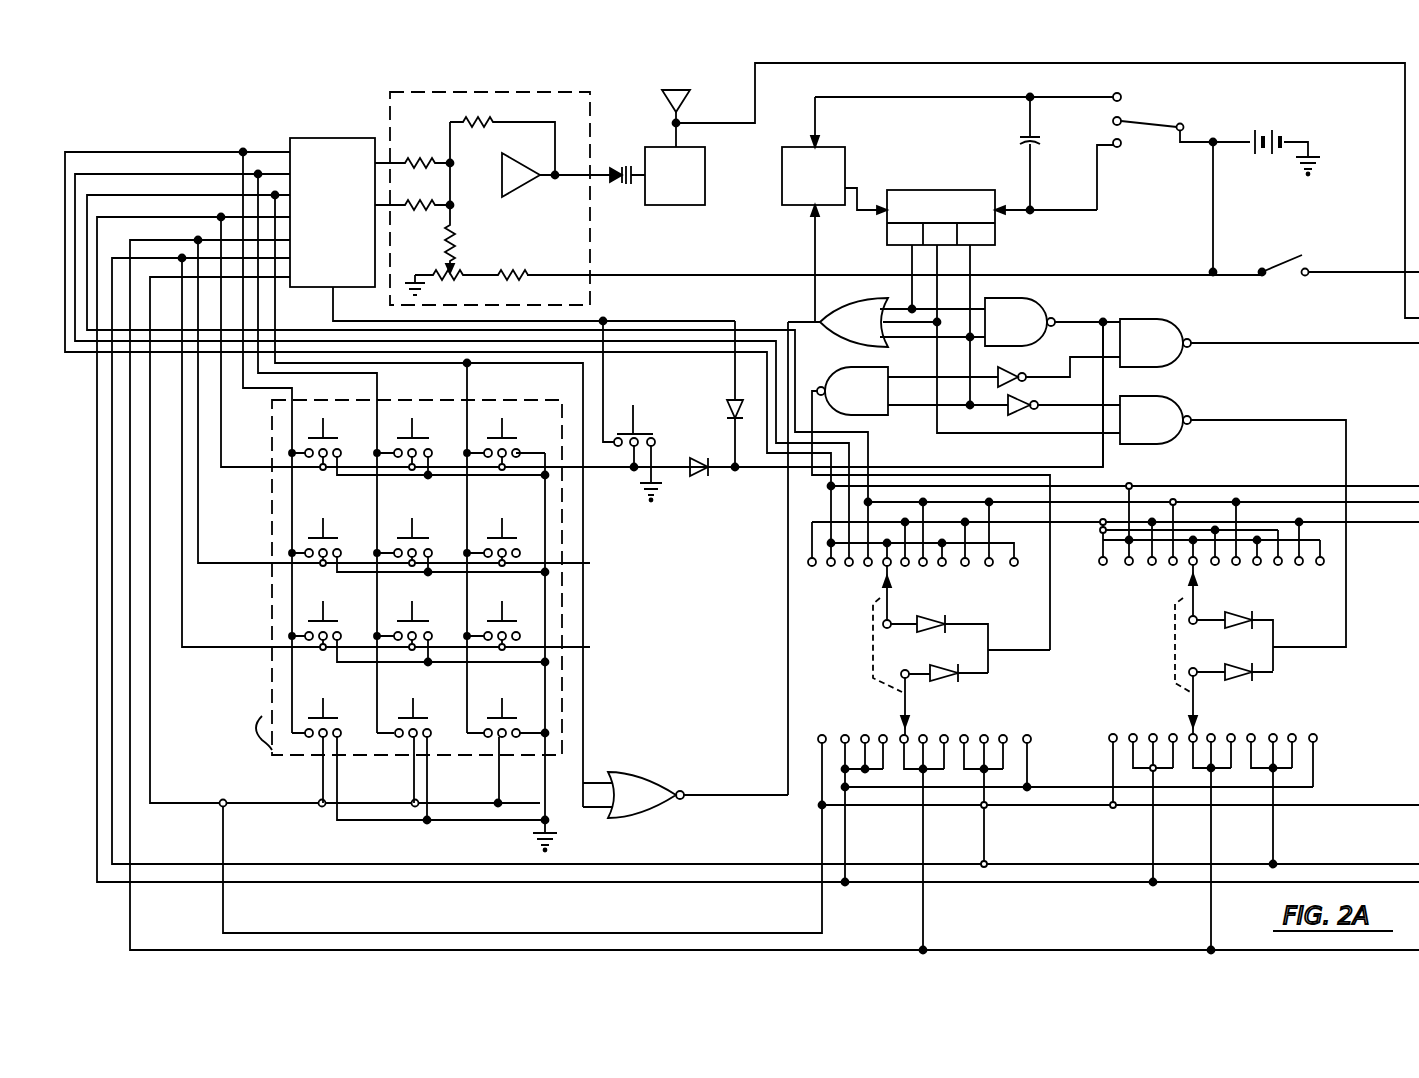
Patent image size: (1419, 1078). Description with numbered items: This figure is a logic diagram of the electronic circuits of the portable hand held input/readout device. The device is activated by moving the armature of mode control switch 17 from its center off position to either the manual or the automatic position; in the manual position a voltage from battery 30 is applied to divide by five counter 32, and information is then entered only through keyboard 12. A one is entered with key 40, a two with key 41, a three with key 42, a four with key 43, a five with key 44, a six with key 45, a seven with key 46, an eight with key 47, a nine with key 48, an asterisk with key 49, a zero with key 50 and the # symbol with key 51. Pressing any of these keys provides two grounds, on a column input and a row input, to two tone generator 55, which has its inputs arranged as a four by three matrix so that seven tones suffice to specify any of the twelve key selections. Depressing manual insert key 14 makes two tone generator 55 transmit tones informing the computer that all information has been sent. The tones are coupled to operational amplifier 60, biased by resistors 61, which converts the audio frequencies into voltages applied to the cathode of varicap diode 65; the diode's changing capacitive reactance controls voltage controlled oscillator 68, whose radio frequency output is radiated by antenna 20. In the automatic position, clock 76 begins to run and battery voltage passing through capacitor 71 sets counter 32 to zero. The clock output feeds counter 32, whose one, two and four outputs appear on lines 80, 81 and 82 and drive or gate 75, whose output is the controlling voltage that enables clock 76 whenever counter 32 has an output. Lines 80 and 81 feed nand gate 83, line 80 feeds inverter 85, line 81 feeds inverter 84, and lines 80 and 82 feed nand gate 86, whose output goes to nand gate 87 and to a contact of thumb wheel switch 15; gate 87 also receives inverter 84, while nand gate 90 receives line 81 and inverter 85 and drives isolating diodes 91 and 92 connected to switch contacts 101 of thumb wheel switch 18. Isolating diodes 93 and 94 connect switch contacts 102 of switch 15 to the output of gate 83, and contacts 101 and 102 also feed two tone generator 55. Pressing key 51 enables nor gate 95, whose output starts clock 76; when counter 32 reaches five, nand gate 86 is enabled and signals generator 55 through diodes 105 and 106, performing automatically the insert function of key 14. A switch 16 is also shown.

The keyboard 12 is at (272, 450).
The manual insert key 14 is at (636, 432).
The thumb wheel switch 15 is at (873, 652).
The switch 16 is at (1285, 253).
The mode control switch 17 is at (1168, 122).
The thumb wheel switch 18 is at (1173, 650).
The antenna 20 is at (684, 92).
The battery 30 is at (1283, 128).
The divide by five counter 32 is at (952, 190).
The key 40 is at (326, 433).
The key 41 is at (415, 433).
The key 42 is at (505, 433).
The key 43 is at (326, 533).
The key 44 is at (415, 533).
The key 45 is at (505, 533).
The key 46 is at (326, 616).
The key 47 is at (415, 616).
The key 48 is at (505, 616).
The key 49 is at (326, 713).
The key 50 is at (416, 713).
The key 51 is at (505, 713).
The two tone generator 55 is at (325, 138).
The operational amplifier 60 is at (448, 92).
The resistors 61 is at (432, 160).
The varicap diode 65 is at (613, 166).
The voltage controlled oscillator 68 is at (708, 163).
The capacitor 71 is at (1025, 136).
The or gate 75 is at (870, 298).
The clock 76 is at (848, 142).
The line 80 is at (975, 258).
The line 81 is at (937, 260).
The line 82 is at (912, 262).
The nand gate 83 is at (853, 367).
The inverter 84 is at (1018, 368).
The inverter 85 is at (1037, 400).
The nand gate 86 is at (1030, 298).
The nand gate 87 is at (1177, 319).
The nand gate 90 is at (1177, 397).
The isolating diode 91 is at (1240, 614).
The isolating diode 92 is at (1242, 680).
The isolating diode 93 is at (932, 617).
The isolating diode 94 is at (947, 682).
The nor gate 95 is at (643, 772).
The switch contacts 101 is at (1171, 565).
The switch contacts 102 is at (868, 567).
The diode 105 is at (733, 398).
The diode 106 is at (694, 474).